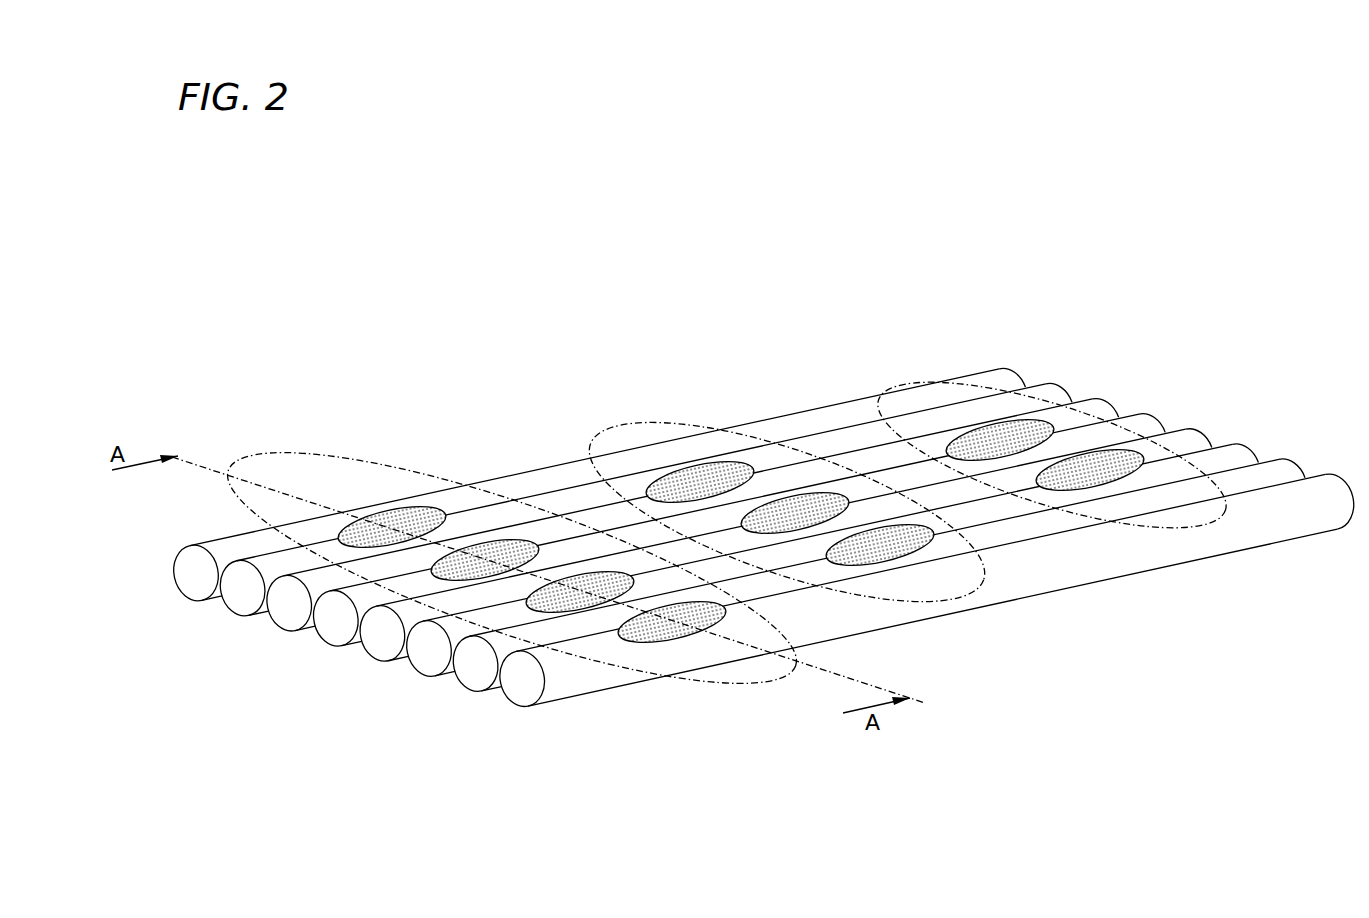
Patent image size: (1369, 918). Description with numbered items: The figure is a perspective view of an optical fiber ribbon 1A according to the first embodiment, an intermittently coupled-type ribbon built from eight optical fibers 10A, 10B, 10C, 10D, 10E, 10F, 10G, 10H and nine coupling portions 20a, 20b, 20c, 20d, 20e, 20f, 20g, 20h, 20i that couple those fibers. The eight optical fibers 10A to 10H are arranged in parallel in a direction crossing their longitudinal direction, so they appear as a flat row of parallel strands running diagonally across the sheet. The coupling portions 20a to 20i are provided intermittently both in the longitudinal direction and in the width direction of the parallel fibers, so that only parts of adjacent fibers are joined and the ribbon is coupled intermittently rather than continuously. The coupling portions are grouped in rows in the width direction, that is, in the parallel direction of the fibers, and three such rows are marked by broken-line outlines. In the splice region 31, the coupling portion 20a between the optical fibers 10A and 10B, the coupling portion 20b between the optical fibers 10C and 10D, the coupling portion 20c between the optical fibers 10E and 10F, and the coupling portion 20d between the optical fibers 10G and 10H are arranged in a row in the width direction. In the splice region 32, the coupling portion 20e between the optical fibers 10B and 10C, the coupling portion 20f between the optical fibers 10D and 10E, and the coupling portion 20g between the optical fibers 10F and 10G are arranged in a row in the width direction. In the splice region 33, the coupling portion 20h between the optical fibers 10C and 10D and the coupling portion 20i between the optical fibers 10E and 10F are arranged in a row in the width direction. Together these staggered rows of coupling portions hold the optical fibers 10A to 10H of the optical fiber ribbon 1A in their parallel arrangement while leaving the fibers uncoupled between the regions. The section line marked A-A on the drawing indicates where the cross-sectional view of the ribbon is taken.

The optical fiber ribbon 1A is at (512, 310).
The optical fiber 10A is at (190, 578).
The optical fiber 10B is at (238, 592).
The optical fiber 10C is at (285, 610).
The optical fiber 10D is at (333, 625).
The optical fiber 10E is at (380, 640).
The optical fiber 10F is at (428, 655).
The optical fiber 10G is at (475, 670).
The optical fiber 10H is at (520, 688).
The coupling portion 20a is at (402, 524).
The coupling portion 20b is at (492, 553).
The coupling portion 20c is at (568, 600).
The coupling portion 20d is at (682, 630).
The coupling portion 20e is at (706, 480).
The coupling portion 20f is at (793, 512).
The coupling portion 20g is at (928, 550).
The coupling portion 20h is at (1010, 440).
The coupling portion 20i is at (1098, 470).
The splice region 31 is at (328, 455).
The splice region 32 is at (661, 437).
The splice region 33 is at (962, 392).